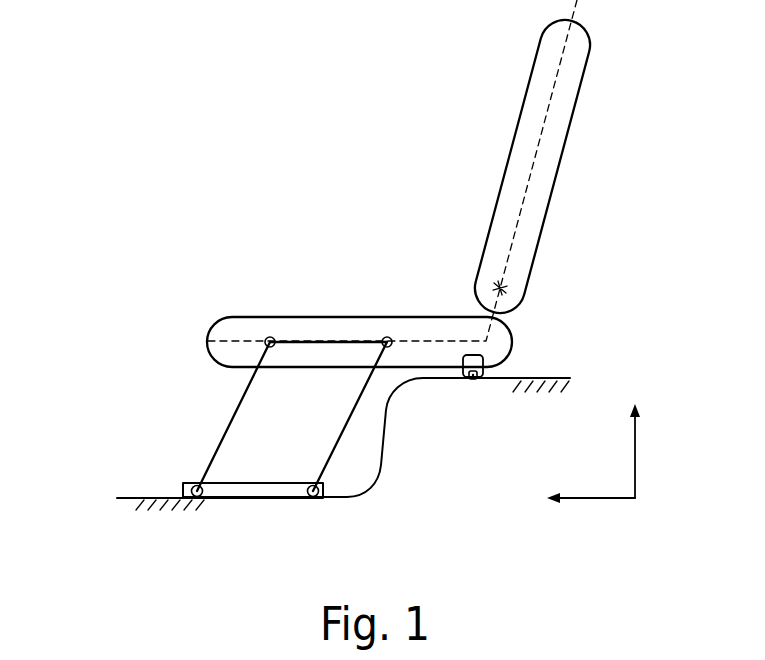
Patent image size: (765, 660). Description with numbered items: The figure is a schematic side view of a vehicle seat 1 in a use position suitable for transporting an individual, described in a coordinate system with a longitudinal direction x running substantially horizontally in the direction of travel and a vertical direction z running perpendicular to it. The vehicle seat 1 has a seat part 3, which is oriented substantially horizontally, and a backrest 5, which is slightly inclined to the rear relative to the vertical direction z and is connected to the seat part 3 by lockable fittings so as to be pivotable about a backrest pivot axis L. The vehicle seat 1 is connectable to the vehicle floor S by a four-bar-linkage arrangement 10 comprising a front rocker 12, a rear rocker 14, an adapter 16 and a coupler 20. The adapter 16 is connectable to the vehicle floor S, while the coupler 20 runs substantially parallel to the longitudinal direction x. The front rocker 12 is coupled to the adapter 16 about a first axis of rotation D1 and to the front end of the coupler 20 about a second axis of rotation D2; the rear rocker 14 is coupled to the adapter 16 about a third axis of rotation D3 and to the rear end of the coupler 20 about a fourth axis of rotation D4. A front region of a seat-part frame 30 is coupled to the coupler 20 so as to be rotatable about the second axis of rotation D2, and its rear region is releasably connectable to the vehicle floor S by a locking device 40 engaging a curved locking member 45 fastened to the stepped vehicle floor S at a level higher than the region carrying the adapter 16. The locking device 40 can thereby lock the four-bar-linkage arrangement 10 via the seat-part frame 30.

The vehicle seat 1 is at (317, 114).
The seat part 3 is at (225, 330).
The backrest 5 is at (545, 78).
The four-bar-linkage arrangement 10 is at (178, 424).
The front rocker 12 is at (244, 393).
The rear rocker 14 is at (343, 433).
The adapter 16 is at (257, 499).
The coupler 20 is at (322, 338).
The seat-part frame 30 is at (470, 338).
The locking device 40 is at (485, 364).
The curved locking member 45 is at (473, 382).
The first axis of rotation D1 is at (198, 499).
The second axis of rotation D2 is at (269, 336).
The third axis of rotation D3 is at (315, 499).
The fourth axis of rotation D4 is at (386, 336).
The backrest pivot axis L is at (504, 293).
The vehicle floor S is at (123, 500).
The longitudinal direction x is at (582, 496).
The vertical direction z is at (643, 448).